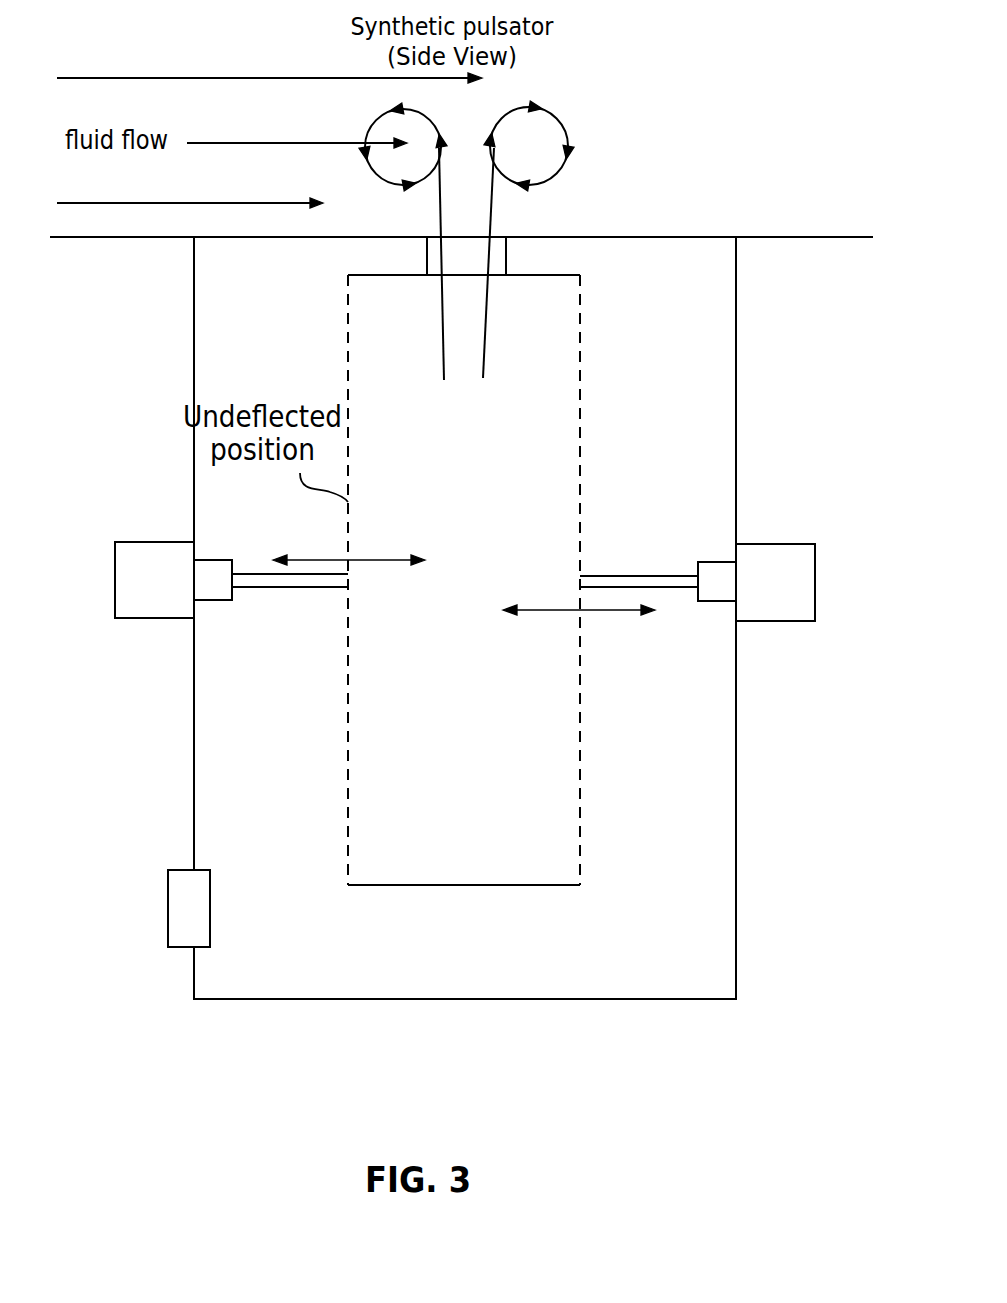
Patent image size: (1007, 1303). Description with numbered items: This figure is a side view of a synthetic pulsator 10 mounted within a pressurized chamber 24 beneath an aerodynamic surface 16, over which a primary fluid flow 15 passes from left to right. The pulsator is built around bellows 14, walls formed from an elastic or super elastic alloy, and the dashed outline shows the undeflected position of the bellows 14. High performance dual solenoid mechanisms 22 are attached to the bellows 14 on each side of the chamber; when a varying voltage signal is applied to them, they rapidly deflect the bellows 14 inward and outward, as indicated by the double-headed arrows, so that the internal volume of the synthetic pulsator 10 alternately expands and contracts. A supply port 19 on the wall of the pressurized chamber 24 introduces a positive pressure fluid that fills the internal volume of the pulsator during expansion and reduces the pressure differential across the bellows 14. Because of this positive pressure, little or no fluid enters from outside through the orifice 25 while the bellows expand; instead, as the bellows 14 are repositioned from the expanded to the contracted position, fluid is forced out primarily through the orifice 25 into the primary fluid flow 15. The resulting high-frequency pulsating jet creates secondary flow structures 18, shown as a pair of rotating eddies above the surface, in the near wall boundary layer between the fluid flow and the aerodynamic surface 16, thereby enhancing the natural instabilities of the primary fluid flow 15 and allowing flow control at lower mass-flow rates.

The synthetic pulsator 10 is at (824, 121).
The bellows 14 is at (347, 776).
The primary fluid flow 15 is at (243, 78).
The aerodynamic surface 16 is at (782, 237).
The secondary flow structures 18 is at (367, 178).
The supply port 19 is at (210, 870).
The high performance dual solenoid (HPDS) mechanism 22 is at (130, 542).
The pressurized chamber 24 is at (737, 358).
The orifice 25 is at (506, 256).